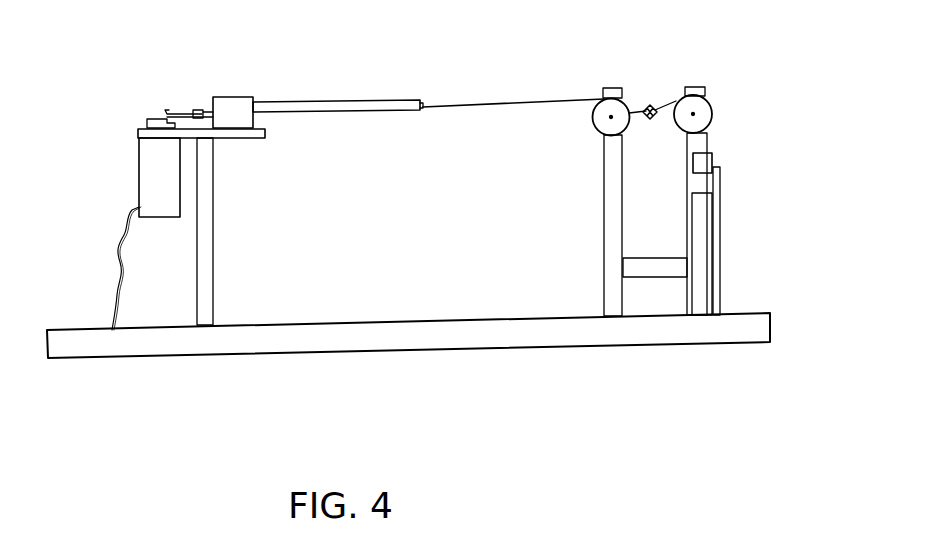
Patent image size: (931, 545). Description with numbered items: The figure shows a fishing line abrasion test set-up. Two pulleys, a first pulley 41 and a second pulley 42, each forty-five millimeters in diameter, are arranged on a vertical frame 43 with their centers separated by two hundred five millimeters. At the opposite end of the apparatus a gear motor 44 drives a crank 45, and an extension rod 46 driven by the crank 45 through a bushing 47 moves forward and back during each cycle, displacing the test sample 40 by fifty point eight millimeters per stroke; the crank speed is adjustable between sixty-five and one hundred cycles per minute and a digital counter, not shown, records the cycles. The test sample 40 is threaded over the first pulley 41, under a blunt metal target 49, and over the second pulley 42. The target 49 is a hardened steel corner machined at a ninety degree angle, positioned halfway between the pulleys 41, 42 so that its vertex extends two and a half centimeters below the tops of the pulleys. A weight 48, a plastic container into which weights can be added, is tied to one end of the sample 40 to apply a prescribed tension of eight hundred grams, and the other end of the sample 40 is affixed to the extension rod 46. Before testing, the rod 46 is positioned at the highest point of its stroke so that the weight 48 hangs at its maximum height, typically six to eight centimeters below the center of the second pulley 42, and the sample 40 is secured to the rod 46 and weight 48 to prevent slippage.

The test sample 40 is at (502, 100).
The first pulley 41 is at (594, 125).
The second pulley 42 is at (713, 113).
The vertical frame 43 is at (611, 88).
The gear motor 44 is at (150, 177).
The crank 45 is at (183, 113).
The extension rod 46 is at (303, 103).
The bushing 47 is at (232, 107).
The weight 48 is at (712, 163).
The blunt metal target 49 is at (650, 104).